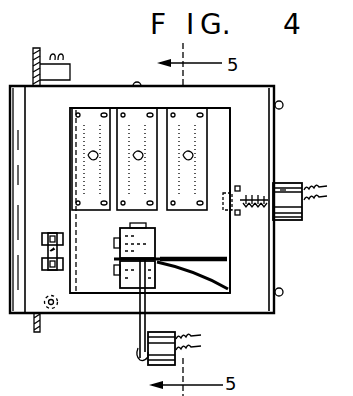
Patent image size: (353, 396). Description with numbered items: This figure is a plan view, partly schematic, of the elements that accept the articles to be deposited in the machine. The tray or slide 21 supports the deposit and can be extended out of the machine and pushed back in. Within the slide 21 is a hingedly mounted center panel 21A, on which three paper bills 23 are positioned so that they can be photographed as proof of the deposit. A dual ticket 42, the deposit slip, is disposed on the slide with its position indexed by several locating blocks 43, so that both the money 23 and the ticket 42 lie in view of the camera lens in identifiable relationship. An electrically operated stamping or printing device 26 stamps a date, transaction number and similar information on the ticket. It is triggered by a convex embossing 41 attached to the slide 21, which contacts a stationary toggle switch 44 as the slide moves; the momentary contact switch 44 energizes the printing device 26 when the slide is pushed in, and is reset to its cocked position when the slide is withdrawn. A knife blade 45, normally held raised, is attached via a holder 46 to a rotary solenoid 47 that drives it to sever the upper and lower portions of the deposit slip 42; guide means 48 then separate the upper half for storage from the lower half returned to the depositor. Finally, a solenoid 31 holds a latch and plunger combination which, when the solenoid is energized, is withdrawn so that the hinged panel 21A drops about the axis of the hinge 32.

The slide 21 is at (255, 94).
The center panel 21A is at (220, 238).
The articles 23 is at (160, 113).
The stamping device 26 is at (52, 233).
The solenoid 31 is at (295, 200).
The hinge 32 is at (67, 142).
The convex embossing 41 is at (138, 82).
The dual ticket 42 is at (121, 295).
The locating blocks 43 is at (117, 245).
The toggle switch 44 is at (55, 67).
The knife blade 45 is at (155, 263).
The holder 46 is at (139, 323).
The rotary solenoid 47 is at (152, 356).
The guide means 48 is at (182, 256).